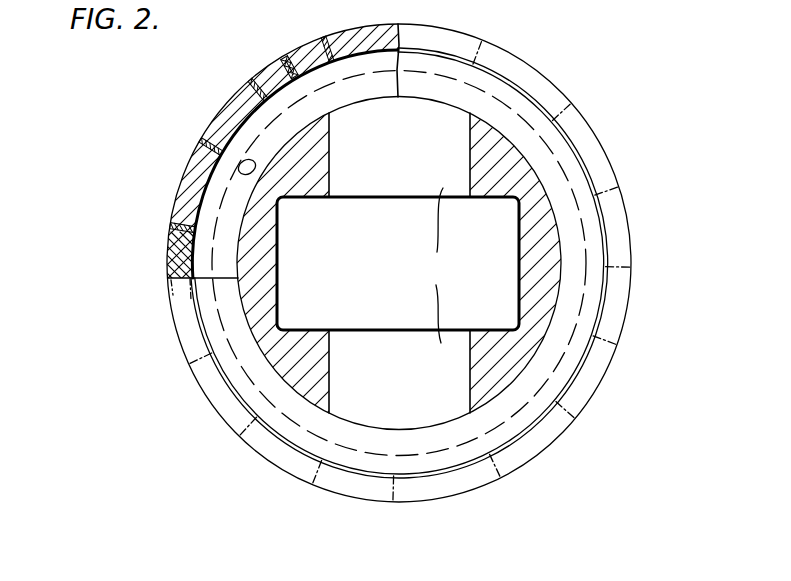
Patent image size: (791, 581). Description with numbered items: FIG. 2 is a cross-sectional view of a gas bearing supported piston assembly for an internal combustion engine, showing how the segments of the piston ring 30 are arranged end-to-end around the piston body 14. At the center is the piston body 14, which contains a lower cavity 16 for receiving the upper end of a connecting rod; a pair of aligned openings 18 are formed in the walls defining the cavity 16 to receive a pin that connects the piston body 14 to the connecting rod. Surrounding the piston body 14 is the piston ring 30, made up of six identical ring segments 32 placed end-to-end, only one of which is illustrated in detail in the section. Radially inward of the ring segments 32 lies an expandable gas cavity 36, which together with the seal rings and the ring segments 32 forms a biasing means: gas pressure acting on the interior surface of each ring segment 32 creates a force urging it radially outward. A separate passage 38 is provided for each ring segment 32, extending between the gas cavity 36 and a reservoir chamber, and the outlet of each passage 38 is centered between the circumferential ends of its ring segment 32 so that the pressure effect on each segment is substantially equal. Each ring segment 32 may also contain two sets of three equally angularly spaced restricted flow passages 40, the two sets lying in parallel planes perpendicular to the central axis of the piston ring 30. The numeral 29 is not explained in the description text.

The piston body 14 is at (330, 166).
The lower cavity 16 is at (367, 273).
The aligned openings 18 is at (448, 265).
The locking piece 29 is at (186, 238).
The piston ring 30 is at (160, 190).
The ring segments 32 is at (300, 47).
The expandable gas cavity 36 is at (228, 299).
The passages 38 is at (256, 165).
The restricted flow passages 40 is at (324, 37).